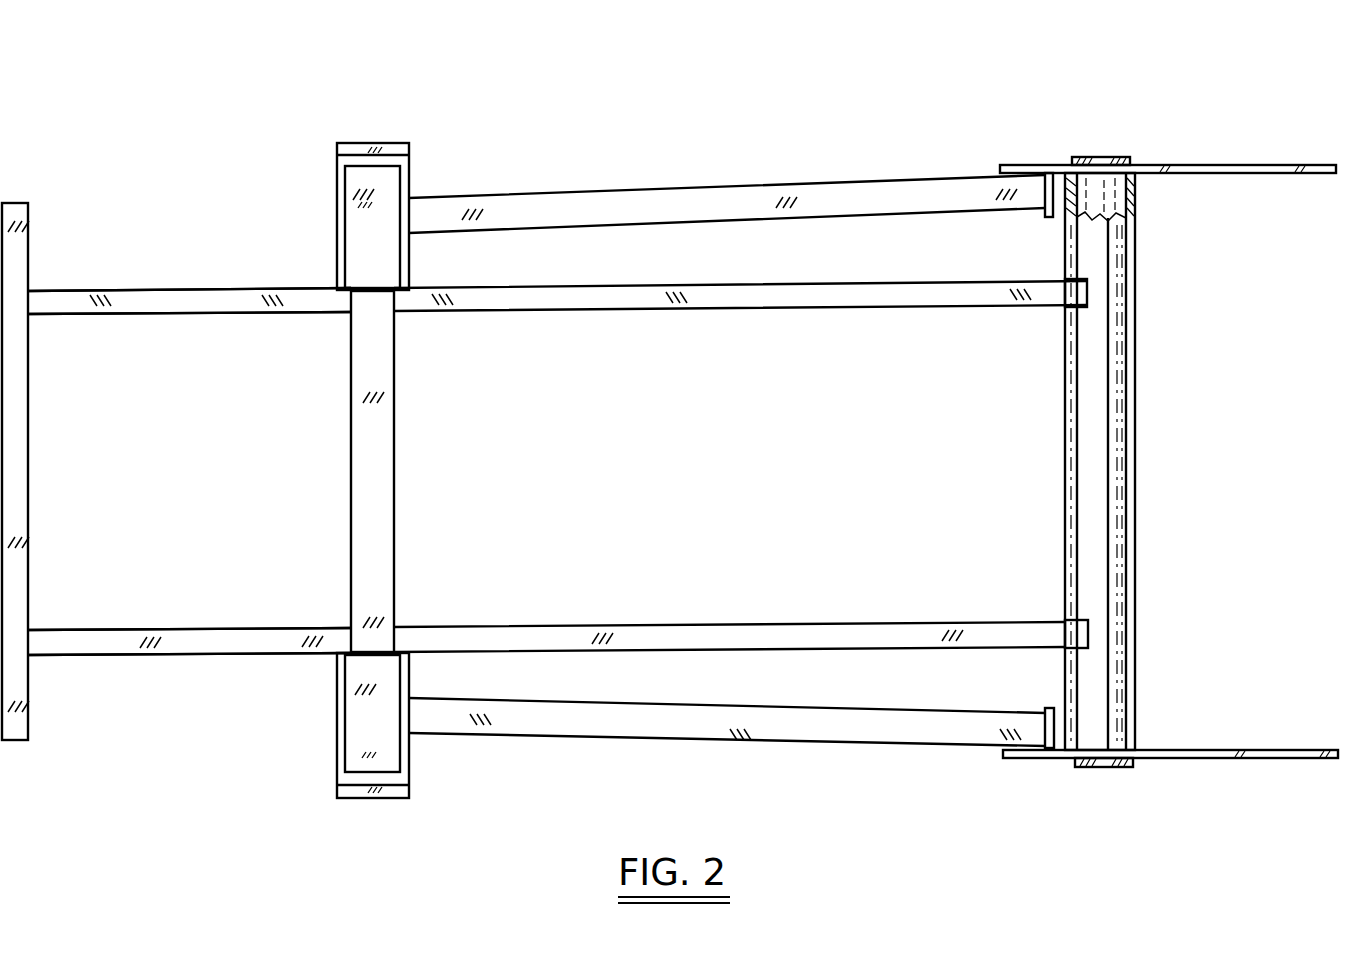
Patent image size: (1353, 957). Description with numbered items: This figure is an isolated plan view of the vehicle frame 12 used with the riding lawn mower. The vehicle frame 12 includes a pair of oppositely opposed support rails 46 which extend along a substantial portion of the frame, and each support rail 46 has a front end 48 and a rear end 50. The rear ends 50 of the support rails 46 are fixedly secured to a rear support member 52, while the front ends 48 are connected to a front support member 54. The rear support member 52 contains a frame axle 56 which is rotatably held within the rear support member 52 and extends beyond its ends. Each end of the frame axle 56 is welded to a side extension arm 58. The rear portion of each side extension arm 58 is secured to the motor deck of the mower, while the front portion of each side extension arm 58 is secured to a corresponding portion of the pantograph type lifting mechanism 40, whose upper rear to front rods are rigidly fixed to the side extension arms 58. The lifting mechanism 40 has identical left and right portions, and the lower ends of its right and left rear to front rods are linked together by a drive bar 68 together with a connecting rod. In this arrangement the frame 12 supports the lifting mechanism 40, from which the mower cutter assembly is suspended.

The vehicle frame 12 is at (675, 65).
The pantograph type lifting mechanism 40 is at (737, 197).
The support rail 46 is at (645, 298).
The front end 48 is at (412, 302).
The rear end 50 is at (1058, 297).
The rear support member 52 is at (1095, 415).
The front support member 54 is at (375, 460).
The frame axle 56 is at (1103, 187).
The side extension arm 58 is at (1233, 163).
The drive bar 68 is at (402, 177).